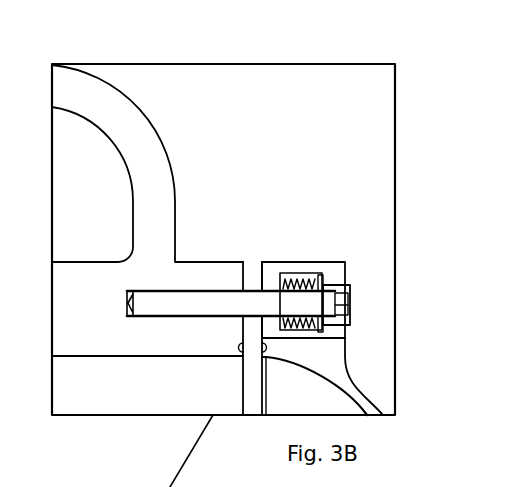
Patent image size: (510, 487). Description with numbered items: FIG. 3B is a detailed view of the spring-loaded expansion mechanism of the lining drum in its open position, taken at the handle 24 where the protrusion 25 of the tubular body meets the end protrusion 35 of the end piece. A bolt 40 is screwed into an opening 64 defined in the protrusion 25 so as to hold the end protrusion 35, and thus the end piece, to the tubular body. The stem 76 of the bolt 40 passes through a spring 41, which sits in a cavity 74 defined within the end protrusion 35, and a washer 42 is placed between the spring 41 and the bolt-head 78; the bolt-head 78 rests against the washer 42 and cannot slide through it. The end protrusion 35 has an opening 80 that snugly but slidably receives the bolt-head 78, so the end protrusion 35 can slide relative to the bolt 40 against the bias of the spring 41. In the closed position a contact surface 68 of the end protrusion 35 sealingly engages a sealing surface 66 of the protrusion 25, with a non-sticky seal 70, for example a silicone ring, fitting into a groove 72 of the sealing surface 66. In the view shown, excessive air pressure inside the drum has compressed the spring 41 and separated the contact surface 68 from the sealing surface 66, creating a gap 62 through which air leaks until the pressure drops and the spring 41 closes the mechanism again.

The handle 24 is at (100, 100).
The protrusion 25 is at (98, 280).
The end protrusion 35 is at (270, 275).
The bolt 40 is at (197, 300).
The spring 41 is at (288, 283).
The washer 42 is at (328, 270).
The gap 62 is at (250, 272).
The opening 64 is at (127, 316).
The sealing surface 66 is at (242, 326).
The contact surface 68 is at (270, 336).
The non-sticky seal 70 is at (252, 356).
The groove 72 is at (240, 350).
The cavity 74 is at (346, 342).
The stem 76 is at (305, 312).
The bolt-head 78 is at (351, 290).
The opening 80 is at (350, 284).